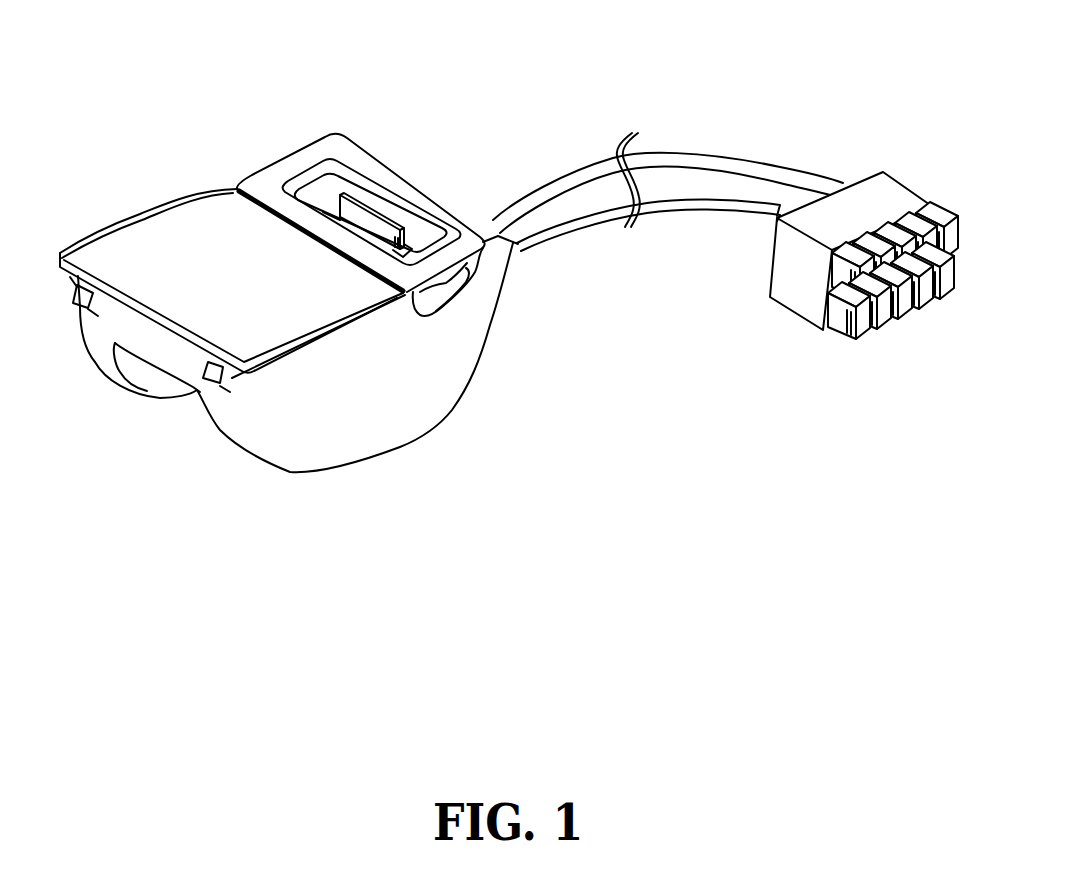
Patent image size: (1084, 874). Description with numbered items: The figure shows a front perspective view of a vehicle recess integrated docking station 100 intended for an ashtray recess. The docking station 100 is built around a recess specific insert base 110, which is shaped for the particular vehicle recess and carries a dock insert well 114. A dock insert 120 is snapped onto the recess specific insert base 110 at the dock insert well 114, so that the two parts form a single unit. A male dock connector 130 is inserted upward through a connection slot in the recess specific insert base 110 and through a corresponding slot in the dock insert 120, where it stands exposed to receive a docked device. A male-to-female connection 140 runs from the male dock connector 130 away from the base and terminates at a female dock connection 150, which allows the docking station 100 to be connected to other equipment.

The vehicle recess integrated docking station 100 is at (590, 63).
The recess specific insert base 110 is at (364, 404).
The dock insert well 114 is at (430, 302).
The dock insert 120 is at (261, 186).
The male dock connector 130 is at (358, 220).
The male-to-female connection 140 is at (698, 205).
The female dock connection 150 is at (877, 224).